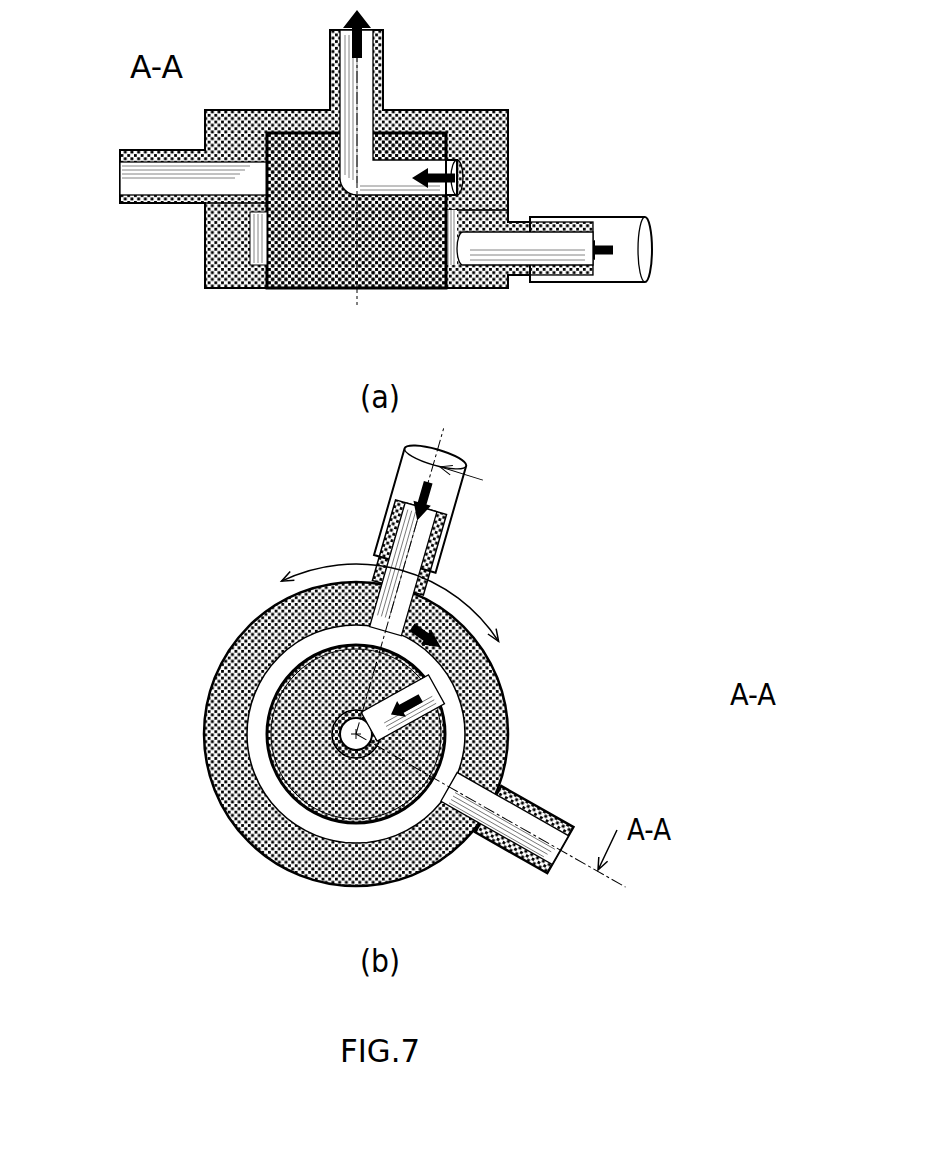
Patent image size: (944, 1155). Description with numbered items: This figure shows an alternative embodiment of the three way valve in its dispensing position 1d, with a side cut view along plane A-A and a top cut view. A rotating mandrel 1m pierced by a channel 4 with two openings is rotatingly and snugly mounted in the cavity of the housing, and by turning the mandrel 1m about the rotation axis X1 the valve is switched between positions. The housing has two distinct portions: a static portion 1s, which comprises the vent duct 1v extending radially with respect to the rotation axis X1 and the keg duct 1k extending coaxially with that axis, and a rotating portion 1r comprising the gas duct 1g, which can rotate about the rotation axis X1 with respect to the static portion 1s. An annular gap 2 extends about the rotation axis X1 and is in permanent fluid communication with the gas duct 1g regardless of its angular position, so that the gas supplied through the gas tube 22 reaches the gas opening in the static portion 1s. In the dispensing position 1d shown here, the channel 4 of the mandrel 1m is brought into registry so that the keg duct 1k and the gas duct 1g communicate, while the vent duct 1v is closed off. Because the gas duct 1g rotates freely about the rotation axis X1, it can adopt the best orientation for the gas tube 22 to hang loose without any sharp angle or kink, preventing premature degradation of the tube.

The dispensing position 1d is at (206, 382).
The static portion 1s is at (470, 110).
The keg duct 1k is at (330, 37).
The channel 4 is at (405, 160).
The vent duct 1v is at (158, 207).
The annular gap 2 is at (260, 265).
The rotating mandrel 1m is at (313, 247).
The rotation axis X1 is at (384, 200).
The rotating portion 1r is at (460, 292).
The gas duct 1g is at (515, 290).
The gas tube 22 is at (595, 290).